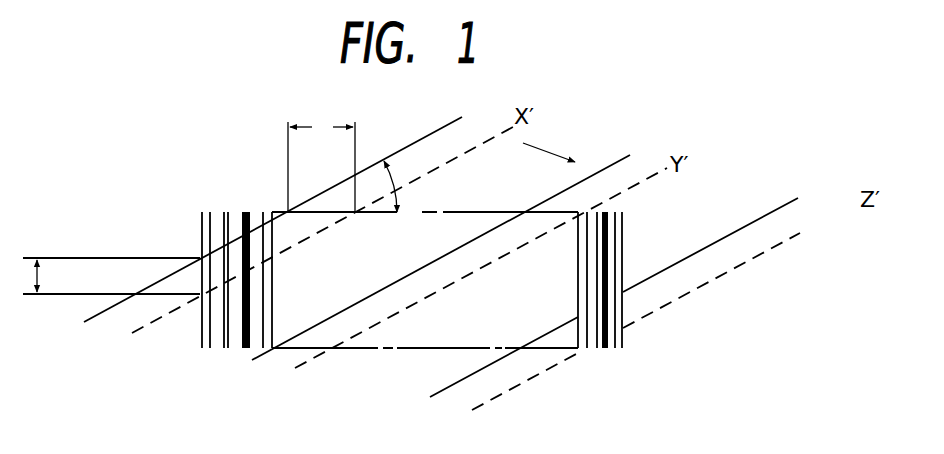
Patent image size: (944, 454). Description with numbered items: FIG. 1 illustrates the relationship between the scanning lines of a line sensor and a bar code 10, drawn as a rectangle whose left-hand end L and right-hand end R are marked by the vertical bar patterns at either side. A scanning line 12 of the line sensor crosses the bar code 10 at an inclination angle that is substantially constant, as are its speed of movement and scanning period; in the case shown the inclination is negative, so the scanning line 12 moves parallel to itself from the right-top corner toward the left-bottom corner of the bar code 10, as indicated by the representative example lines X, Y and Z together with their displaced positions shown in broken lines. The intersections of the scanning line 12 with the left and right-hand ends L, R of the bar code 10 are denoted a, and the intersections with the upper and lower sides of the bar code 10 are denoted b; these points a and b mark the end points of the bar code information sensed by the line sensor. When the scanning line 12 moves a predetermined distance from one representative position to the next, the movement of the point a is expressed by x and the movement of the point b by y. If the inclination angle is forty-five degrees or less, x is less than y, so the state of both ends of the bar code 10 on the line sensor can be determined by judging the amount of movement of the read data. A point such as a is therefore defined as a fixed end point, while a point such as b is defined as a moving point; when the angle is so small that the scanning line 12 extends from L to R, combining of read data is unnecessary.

The bar code 10 is at (231, 269).
The scanning line 12 is at (282, 204).
The left-hand end L is at (231, 296).
The right-hand end R is at (607, 296).
The representative example line X is at (410, 113).
The representative example line Y is at (448, 249).
The representative example line Z is at (626, 285).
The fixed end point a is at (332, 276).
The moving point b is at (424, 284).
The movement of point a x is at (43, 277).
The movement of point b y is at (321, 162).